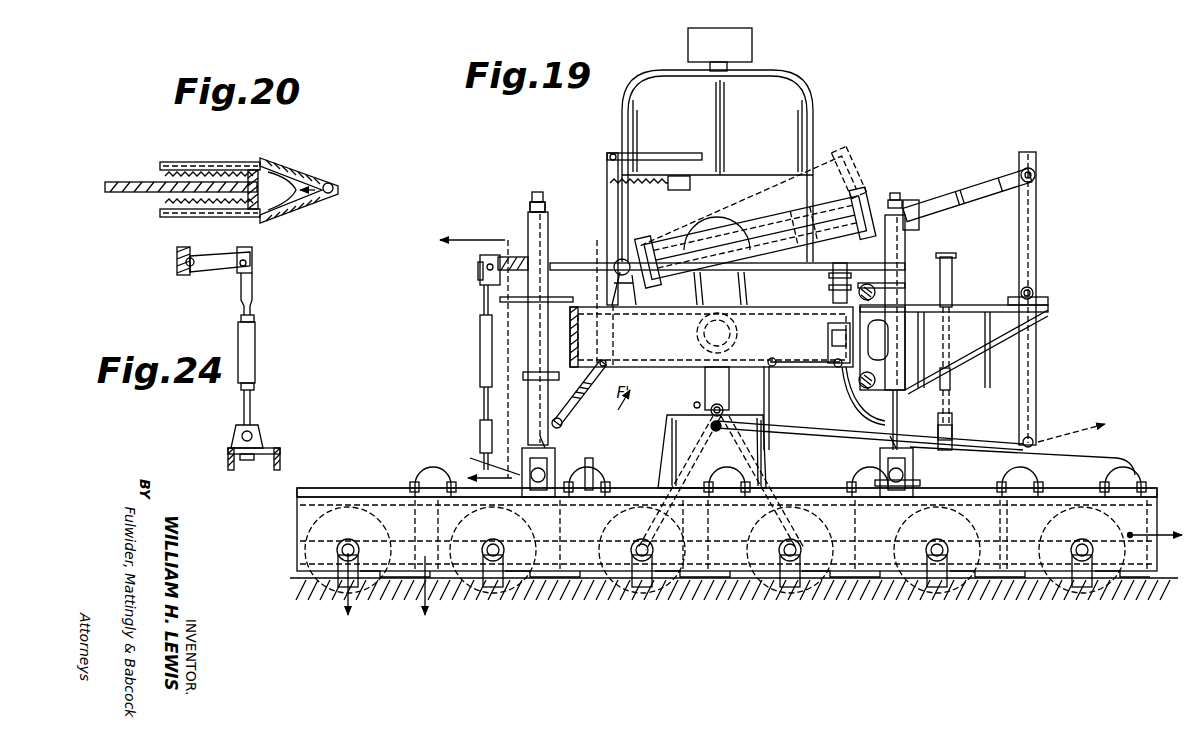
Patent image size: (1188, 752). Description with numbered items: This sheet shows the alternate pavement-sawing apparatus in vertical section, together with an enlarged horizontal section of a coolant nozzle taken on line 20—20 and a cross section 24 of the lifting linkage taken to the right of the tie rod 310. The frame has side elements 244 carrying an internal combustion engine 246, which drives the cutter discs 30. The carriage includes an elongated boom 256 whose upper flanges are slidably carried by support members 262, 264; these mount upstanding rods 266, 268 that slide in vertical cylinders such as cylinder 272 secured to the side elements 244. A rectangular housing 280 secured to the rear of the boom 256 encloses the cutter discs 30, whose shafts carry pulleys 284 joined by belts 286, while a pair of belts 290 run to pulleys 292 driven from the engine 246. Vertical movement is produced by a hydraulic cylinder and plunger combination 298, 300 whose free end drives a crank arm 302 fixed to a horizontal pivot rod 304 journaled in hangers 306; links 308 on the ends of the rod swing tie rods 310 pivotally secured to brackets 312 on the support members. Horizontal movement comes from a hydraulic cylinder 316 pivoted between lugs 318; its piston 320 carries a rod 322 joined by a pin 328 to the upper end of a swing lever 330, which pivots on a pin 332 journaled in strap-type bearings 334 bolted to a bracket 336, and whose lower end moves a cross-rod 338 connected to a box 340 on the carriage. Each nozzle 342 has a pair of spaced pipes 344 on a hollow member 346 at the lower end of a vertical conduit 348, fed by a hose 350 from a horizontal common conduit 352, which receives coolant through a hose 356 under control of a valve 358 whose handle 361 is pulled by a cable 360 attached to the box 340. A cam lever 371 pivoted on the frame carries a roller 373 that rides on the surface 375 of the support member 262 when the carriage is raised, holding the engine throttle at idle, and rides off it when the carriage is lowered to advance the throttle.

In FIG. 19, the section line 20 is at (388, 597).
In FIG. 19, the cross-section indicator 24 is at (474, 345).
In FIG. 19, the cutter discs 30 is at (330, 580).
In FIG. 19, the side elements 244 is at (575, 335).
In FIG. 19, the internal combustion engine 246 is at (797, 96).
In FIG. 19, the elongated boom 256 is at (338, 488).
In FIG. 19, the support member 262 is at (568, 465).
In FIG. 19, the support member 264 is at (920, 483).
In FIG. 19, the upstanding rod 266 is at (530, 412).
In FIG. 19, the upstanding rod 268 is at (950, 412).
In FIG. 19, the vertical cylinder 272 is at (524, 238).
In FIG. 19, the rectangular housing 280 is at (585, 580).
In FIG. 19, the pulleys 284 is at (1130, 618).
In FIG. 19, the belts 286 is at (1048, 618).
In FIG. 19, the belts 290 is at (690, 366).
In FIG. 19, the pulleys 292 is at (710, 408).
In FIG. 19, the pivot pin 298 is at (600, 367).
In FIG. 19, the cross bar 300 is at (812, 290).
In FIG. 24, the crank arm 302 is at (222, 270).
In FIG. 19, the crank arm 302 is at (480, 284).
In FIG. 24, the horizontal pivot rod 304 is at (186, 267).
In FIG. 19, the horizontal pivot rod 304 is at (557, 262).
In FIG. 19, the hangers 306 is at (497, 263).
In FIG. 19, the links 308 is at (950, 282).
In FIG. 24, the tie rod 310 is at (254, 349).
In FIG. 19, the tie rod 310 is at (480, 336).
In FIG. 24, the bracket 312 is at (228, 460).
In FIG. 19, the bracket 312 is at (475, 458).
In FIG. 19, the hydraulic cylinder 316 is at (782, 213).
In FIG. 19, the lugs 318 is at (593, 298).
In FIG. 19, the piston 320 is at (856, 176).
In FIG. 19, the rod 322 is at (925, 188).
In FIG. 19, the pin 328 is at (1038, 180).
In FIG. 19, the swing lever 330 is at (1037, 243).
In FIG. 19, the pin 332 is at (1035, 290).
In FIG. 19, the strap-type bearings 334 is at (1050, 310).
In FIG. 19, the bracket 336 is at (1000, 333).
In FIG. 19, the cross-rod 338 is at (1031, 436).
In FIG. 19, the box 340 is at (770, 435).
In FIG. 20, the nozzle 342 is at (160, 208).
In FIG. 19, the nozzle 342 is at (955, 595).
In FIG. 20, the pipes 344 is at (188, 168).
In FIG. 20, the hollow member 346 is at (318, 178).
In FIG. 20, the vertical conduit 348 is at (334, 186).
In FIG. 19, the vertical conduit 348 is at (397, 486).
In FIG. 19, the hose 350 is at (432, 466).
In FIG. 19, the common conduit 352 is at (596, 470).
In FIG. 19, the hose 356 is at (852, 400).
In FIG. 19, the control valve 358 is at (836, 368).
In FIG. 19, the cable 360 is at (790, 366).
In FIG. 19, the handle 361 is at (826, 340).
In FIG. 19, the cam lever 371 is at (620, 222).
In FIG. 19, the roller 373 is at (564, 424).
In FIG. 19, the surface 375 is at (535, 448).